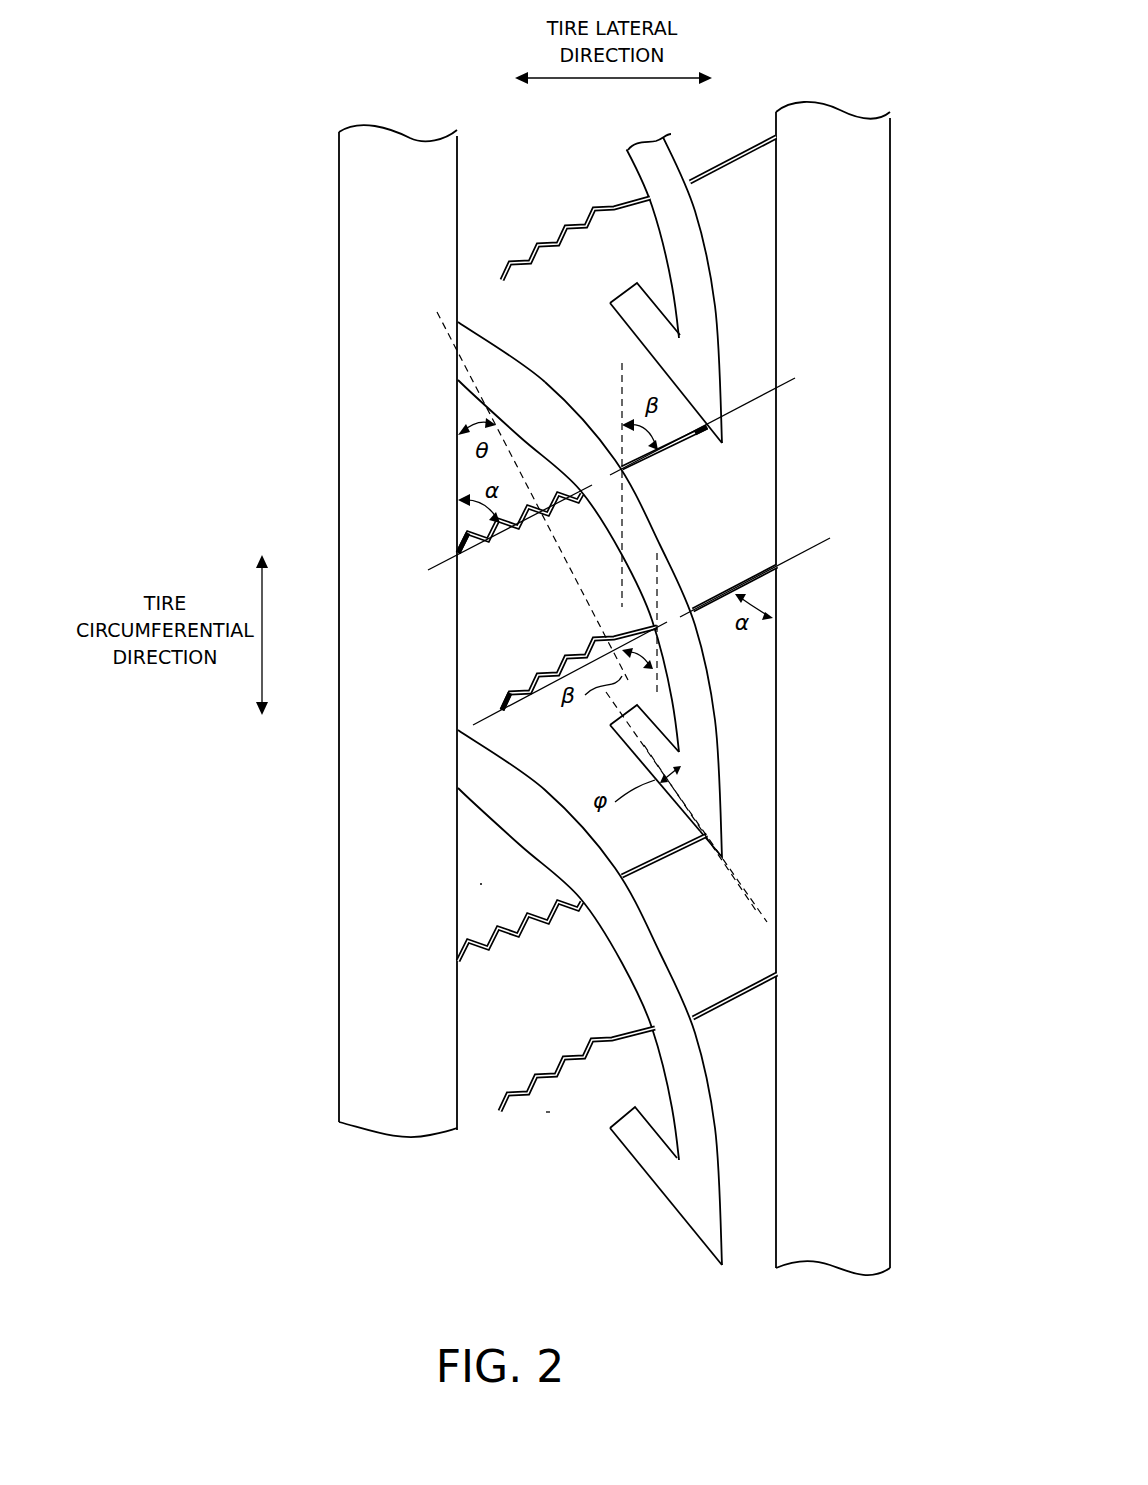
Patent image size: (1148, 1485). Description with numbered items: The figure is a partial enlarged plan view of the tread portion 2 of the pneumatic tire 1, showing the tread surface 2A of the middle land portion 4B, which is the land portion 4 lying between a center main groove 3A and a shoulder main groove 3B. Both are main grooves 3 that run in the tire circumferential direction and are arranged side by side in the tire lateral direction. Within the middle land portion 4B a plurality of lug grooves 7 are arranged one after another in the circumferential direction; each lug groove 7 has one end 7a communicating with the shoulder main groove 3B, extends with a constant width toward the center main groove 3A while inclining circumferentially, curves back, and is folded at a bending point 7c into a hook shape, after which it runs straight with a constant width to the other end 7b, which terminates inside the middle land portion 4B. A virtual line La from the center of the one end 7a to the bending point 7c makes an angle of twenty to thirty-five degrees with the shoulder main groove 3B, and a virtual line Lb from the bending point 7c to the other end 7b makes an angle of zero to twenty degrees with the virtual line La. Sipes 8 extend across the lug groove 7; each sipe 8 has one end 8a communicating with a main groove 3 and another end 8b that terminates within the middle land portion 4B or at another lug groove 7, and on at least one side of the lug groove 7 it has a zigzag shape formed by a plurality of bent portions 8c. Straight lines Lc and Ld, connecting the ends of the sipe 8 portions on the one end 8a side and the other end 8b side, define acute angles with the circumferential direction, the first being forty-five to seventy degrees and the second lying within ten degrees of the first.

The pneumatic tire 1 is at (896, 66).
The tread portion 2 is at (480, 884).
The tread surface 2A is at (556, 1012).
The main groove 3 is at (614, 665).
The center main groove 3A is at (828, 125).
The shoulder main groove 3B is at (392, 143).
The land portion 4 is at (553, 1164).
The middle land portion 4B is at (548, 1112).
The lug groove 7 is at (650, 538).
The one end of lug groove 7a is at (470, 341).
The other end of lug groove 7b is at (610, 716).
The bending point 7c is at (737, 845).
The sipe 8 is at (680, 430).
The one end of sipe 8a is at (775, 562).
The other end of sipe 8b is at (705, 438).
The bent portion 8c is at (532, 518).
The virtual line La is at (520, 468).
The virtual line Lb is at (630, 750).
The straight line Lc is at (478, 545).
The straight line Ld is at (750, 402).